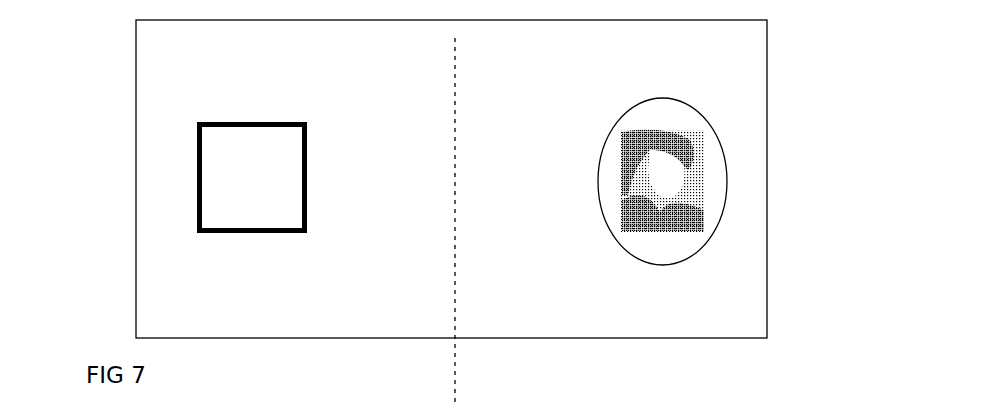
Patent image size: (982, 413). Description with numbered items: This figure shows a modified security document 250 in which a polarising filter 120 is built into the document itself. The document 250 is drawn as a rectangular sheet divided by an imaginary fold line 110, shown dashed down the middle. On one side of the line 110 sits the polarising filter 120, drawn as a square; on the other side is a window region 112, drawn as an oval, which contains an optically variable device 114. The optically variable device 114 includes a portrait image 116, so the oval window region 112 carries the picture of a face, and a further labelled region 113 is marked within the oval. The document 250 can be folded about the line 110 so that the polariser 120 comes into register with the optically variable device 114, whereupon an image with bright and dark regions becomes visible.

The security document 250 is at (136, 63).
The fold line 110 is at (455, 353).
The polarising filter 120 is at (258, 234).
The window region 112 is at (668, 98).
The optically variable device 114 is at (707, 153).
The oval background area 113 is at (660, 250).
The portrait image 116 is at (687, 215).